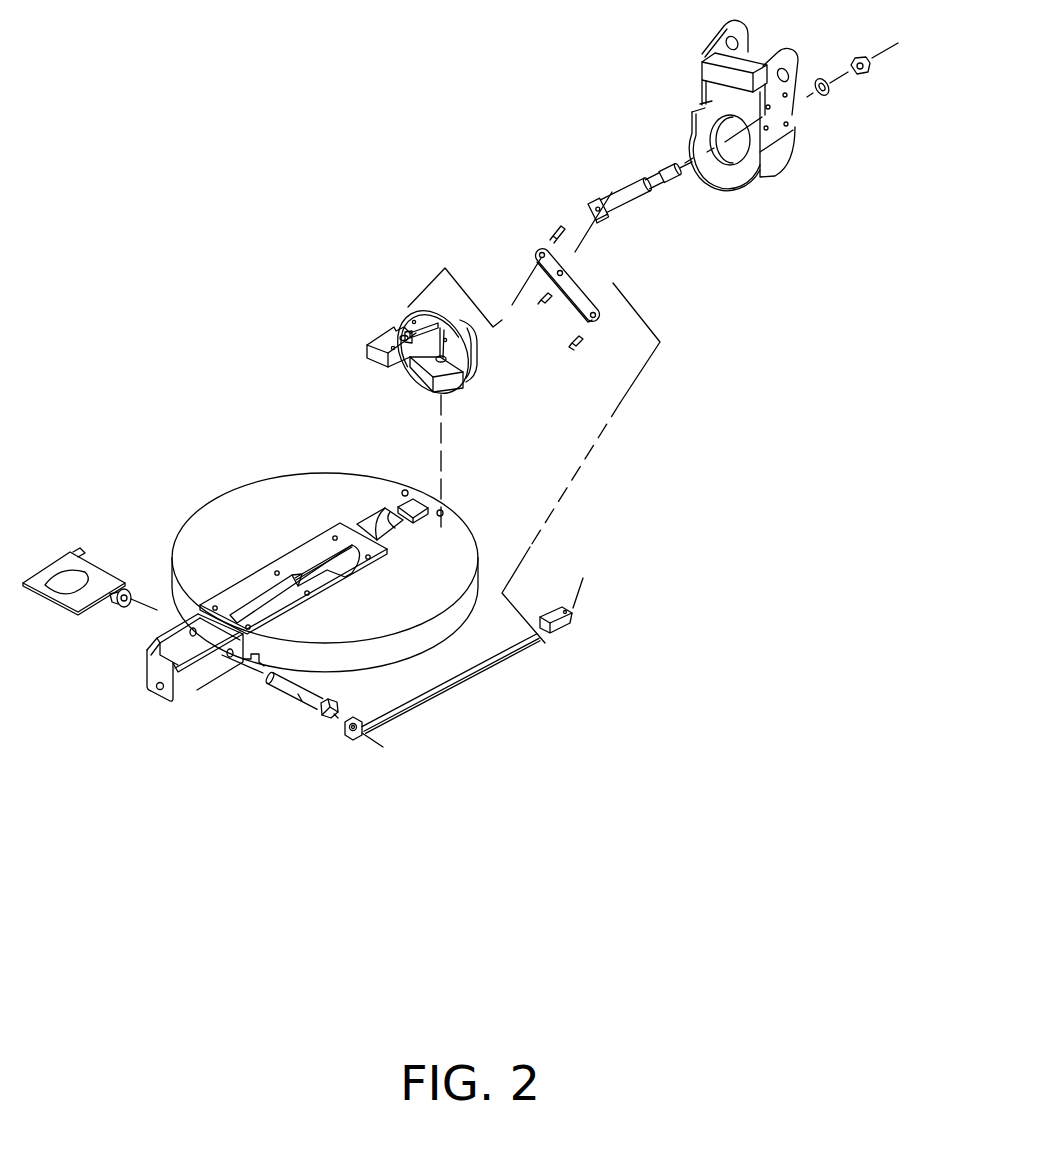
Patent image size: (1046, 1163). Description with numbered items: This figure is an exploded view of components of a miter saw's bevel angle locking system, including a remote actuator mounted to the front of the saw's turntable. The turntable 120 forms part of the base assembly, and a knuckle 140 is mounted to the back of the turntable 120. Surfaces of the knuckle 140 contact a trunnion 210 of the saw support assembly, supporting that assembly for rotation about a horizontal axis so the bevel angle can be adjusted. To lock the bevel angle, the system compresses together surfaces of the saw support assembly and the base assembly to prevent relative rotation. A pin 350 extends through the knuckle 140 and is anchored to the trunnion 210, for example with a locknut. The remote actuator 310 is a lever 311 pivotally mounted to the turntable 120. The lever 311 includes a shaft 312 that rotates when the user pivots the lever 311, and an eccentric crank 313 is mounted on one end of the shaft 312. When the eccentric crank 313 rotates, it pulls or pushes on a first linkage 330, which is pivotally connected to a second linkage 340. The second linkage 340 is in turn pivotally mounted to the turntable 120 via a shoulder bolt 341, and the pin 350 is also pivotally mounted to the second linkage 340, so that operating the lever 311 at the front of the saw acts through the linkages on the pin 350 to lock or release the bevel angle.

The turntable 120 is at (258, 480).
The knuckle 140 is at (380, 333).
The trunnion 210 is at (765, 176).
The remote actuator 310 is at (98, 568).
The lever 311 is at (73, 617).
The shaft 312 is at (296, 702).
The eccentric crank 313 is at (328, 719).
The first linkage 330 is at (440, 693).
The second linkage 340 is at (570, 306).
The shoulder bolt 341 is at (556, 224).
The pin 350 is at (637, 205).